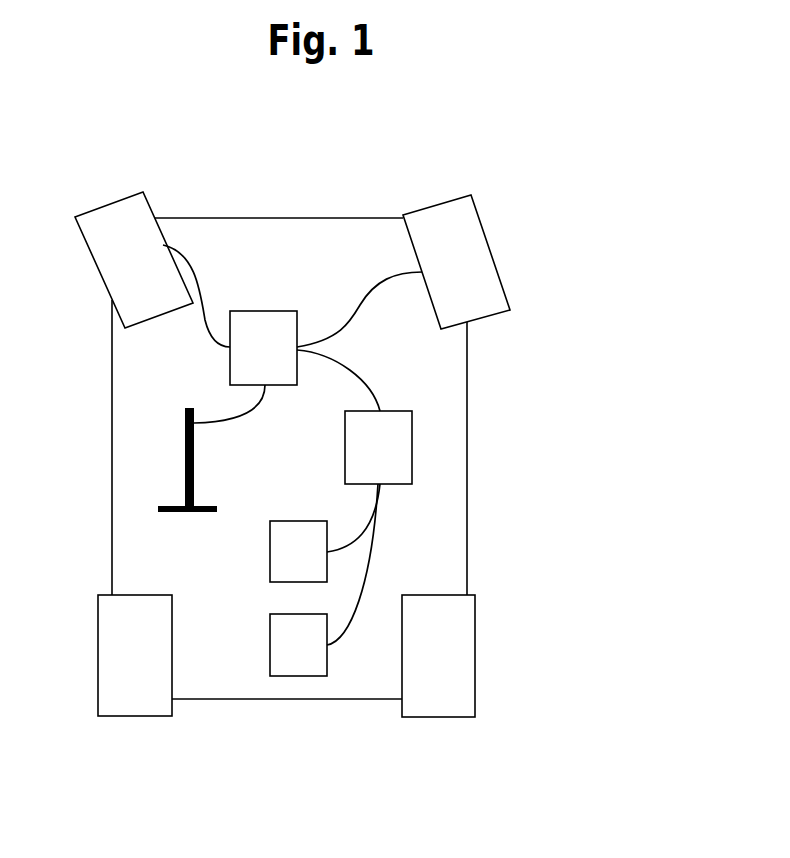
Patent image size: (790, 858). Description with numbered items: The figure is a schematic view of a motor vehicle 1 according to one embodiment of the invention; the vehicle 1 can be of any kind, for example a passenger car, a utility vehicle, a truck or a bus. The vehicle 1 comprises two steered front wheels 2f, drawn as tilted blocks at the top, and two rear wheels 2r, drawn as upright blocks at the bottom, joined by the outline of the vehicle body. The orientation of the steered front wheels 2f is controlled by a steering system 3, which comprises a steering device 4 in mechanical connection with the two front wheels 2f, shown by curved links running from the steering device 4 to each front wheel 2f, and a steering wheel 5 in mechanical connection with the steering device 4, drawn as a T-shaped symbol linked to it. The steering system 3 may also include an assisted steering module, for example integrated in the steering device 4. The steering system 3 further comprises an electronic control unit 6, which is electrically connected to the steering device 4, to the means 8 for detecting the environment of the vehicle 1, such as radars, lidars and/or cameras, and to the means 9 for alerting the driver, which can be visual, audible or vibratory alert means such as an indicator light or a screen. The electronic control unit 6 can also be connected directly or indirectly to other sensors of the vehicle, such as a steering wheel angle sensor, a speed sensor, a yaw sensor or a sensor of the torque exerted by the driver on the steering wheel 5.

The motor vehicle 1 is at (530, 203).
The steered front wheels 2f is at (292, 260).
The rear wheels 2r is at (286, 656).
The steering system 3 is at (432, 383).
The steering device 4 is at (263, 348).
The steering wheel 5 is at (177, 510).
The electronic control unit 6 is at (378, 447).
The means for detecting the environment 8 is at (298, 551).
The means for alerting the driver 9 is at (298, 645).